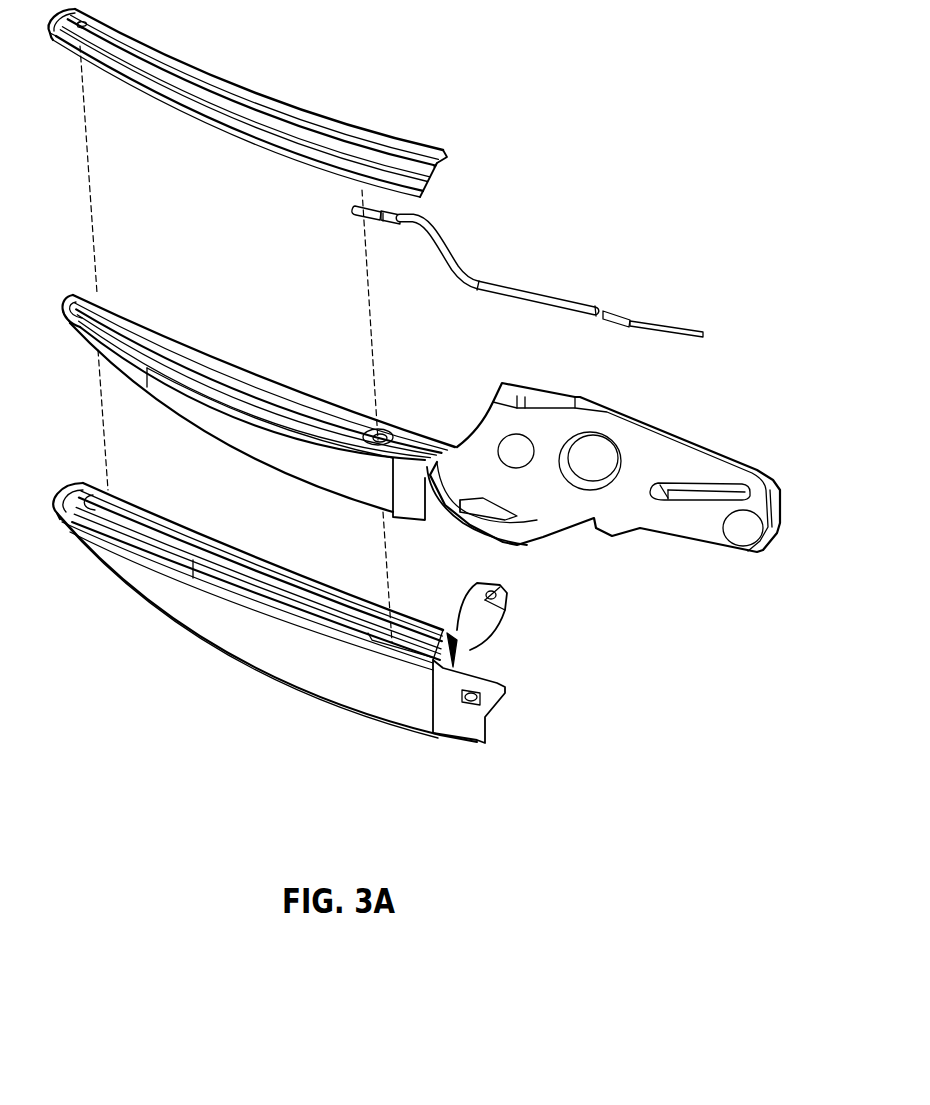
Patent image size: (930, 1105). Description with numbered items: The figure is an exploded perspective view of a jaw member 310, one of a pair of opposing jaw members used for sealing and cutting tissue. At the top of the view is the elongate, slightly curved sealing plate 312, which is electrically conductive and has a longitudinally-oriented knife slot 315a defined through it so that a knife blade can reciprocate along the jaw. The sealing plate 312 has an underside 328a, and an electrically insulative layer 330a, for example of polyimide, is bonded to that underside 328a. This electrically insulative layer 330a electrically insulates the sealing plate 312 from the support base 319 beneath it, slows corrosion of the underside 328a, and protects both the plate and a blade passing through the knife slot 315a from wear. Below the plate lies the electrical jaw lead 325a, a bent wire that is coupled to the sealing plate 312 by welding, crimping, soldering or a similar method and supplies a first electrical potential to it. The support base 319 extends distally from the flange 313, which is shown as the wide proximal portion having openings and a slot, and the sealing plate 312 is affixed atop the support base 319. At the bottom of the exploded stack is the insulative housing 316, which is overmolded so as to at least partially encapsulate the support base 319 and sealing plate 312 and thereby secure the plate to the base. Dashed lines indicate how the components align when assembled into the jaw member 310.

The jaw member 310 is at (470, 56).
The sealing plate 312 is at (400, 148).
The flange 313 is at (670, 435).
The knife slot 315a is at (270, 117).
The insulative housing 316 is at (228, 632).
The support base 319 is at (220, 420).
The electrical jaw lead 325a is at (545, 291).
The underside 328a is at (223, 133).
The electrically insulative layer 330a is at (443, 160).